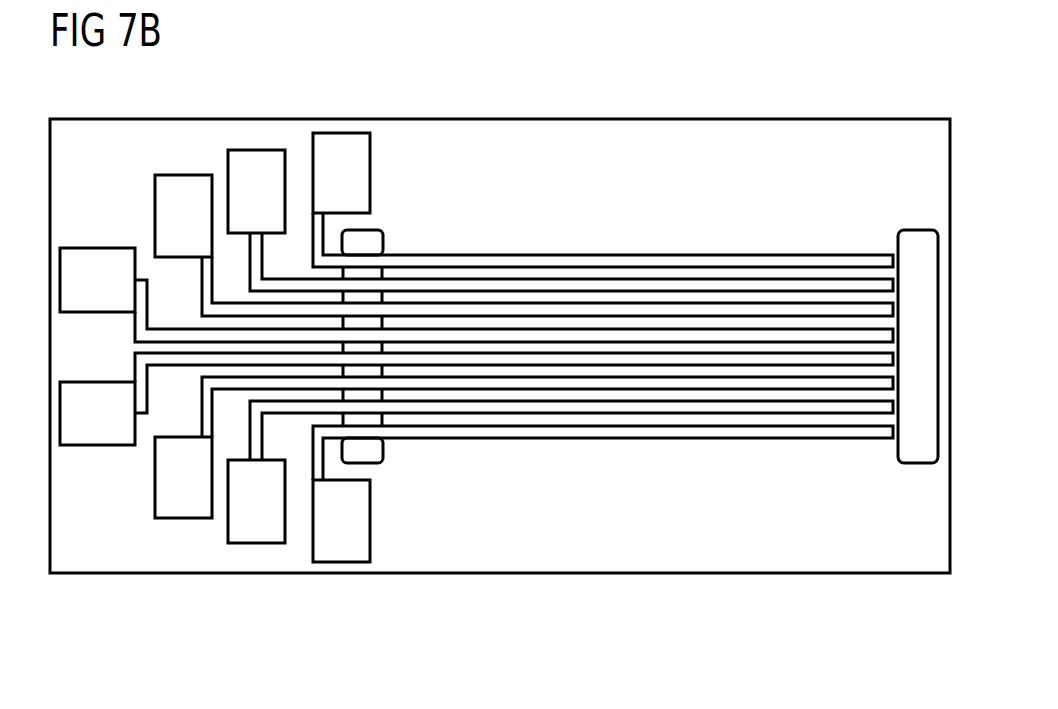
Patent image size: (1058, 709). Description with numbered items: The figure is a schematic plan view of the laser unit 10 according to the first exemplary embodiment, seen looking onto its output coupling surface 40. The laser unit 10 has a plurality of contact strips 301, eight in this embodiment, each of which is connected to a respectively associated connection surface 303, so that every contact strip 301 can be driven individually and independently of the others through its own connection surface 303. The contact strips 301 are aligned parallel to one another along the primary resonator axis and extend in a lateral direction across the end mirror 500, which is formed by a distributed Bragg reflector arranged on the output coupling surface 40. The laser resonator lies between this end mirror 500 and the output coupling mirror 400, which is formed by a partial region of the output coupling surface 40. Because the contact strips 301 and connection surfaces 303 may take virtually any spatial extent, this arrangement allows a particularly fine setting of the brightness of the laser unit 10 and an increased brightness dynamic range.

The laser unit 10 is at (822, 98).
The output coupling surface 40 is at (868, 157).
The contact strips 301 is at (648, 337).
The connection surface 303 is at (338, 142).
The output coupling mirror 400 is at (918, 229).
The end mirror 500 is at (373, 243).